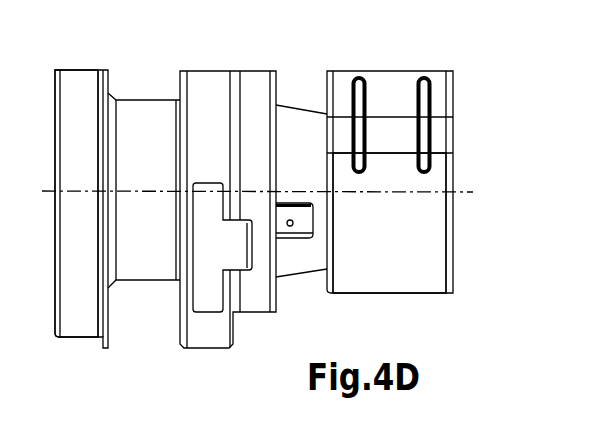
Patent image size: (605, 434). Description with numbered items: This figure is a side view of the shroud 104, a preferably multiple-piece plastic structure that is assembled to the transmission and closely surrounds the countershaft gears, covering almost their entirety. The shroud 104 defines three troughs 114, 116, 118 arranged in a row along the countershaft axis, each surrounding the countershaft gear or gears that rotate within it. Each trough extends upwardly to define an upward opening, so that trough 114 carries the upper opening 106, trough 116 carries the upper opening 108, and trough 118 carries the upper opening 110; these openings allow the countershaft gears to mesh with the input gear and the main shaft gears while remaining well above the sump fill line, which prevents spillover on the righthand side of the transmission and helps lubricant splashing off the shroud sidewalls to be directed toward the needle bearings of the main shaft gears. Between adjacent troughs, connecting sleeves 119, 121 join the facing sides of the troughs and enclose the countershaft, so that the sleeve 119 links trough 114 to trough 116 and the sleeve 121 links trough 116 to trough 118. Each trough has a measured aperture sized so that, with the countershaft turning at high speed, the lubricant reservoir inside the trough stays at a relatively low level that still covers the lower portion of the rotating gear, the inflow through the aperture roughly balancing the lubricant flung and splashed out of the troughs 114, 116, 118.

The shroud 104 is at (505, 134).
The upper opening 106 is at (78, 70).
The upper opening 108 is at (213, 71).
The upper opening 110 is at (388, 70).
The trough 114 is at (80, 310).
The trough 116 is at (212, 328).
The trough 118 is at (427, 238).
The connecting sleeve 119 is at (143, 280).
The connecting sleeve 121 is at (293, 282).